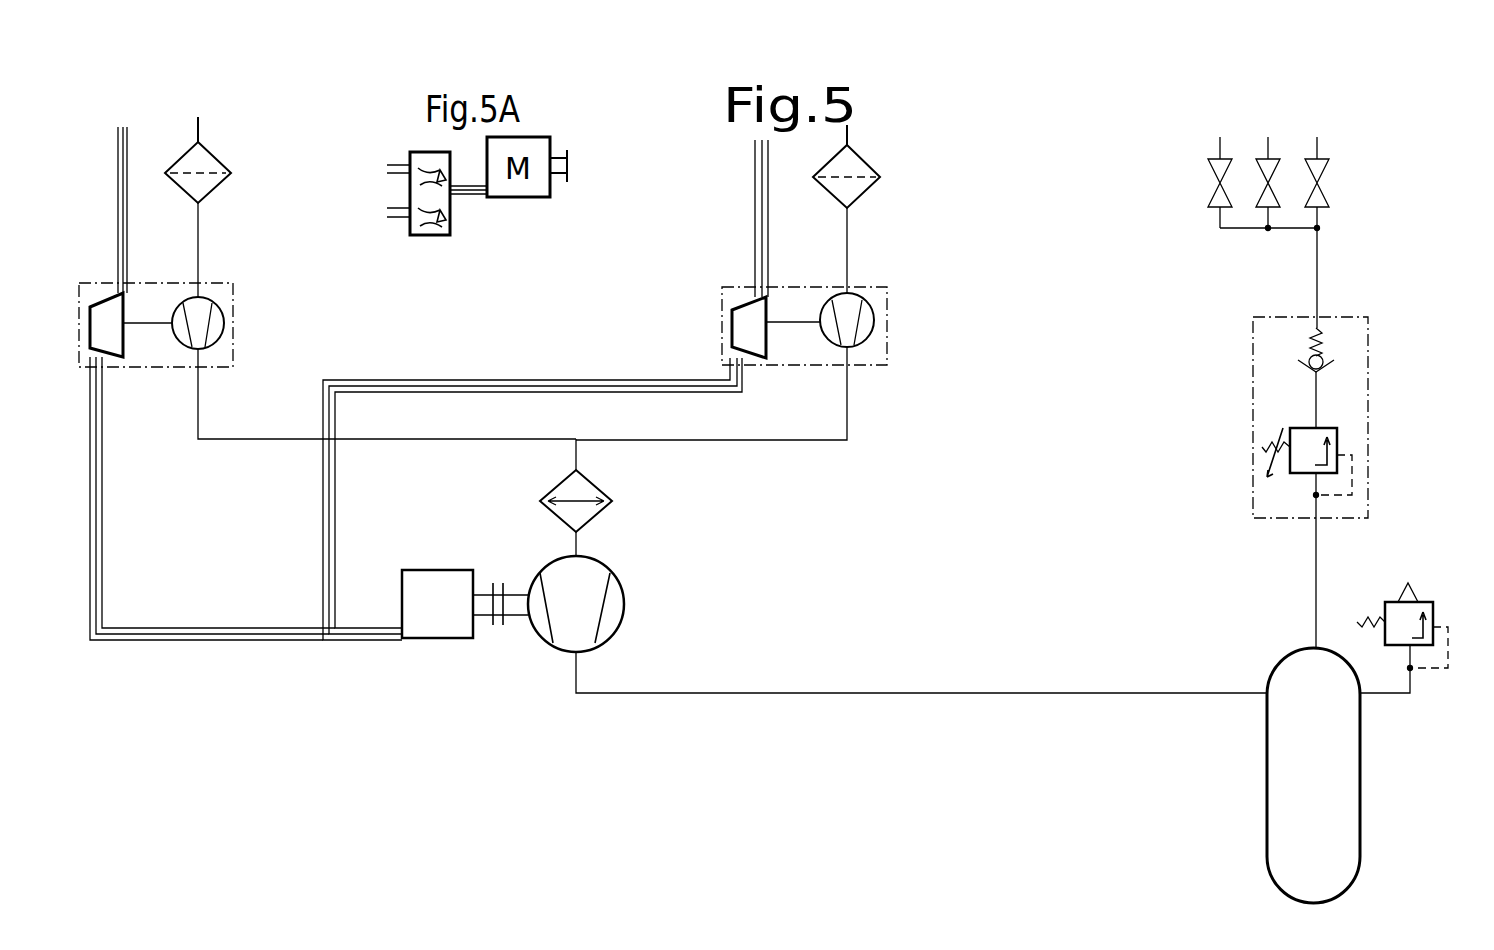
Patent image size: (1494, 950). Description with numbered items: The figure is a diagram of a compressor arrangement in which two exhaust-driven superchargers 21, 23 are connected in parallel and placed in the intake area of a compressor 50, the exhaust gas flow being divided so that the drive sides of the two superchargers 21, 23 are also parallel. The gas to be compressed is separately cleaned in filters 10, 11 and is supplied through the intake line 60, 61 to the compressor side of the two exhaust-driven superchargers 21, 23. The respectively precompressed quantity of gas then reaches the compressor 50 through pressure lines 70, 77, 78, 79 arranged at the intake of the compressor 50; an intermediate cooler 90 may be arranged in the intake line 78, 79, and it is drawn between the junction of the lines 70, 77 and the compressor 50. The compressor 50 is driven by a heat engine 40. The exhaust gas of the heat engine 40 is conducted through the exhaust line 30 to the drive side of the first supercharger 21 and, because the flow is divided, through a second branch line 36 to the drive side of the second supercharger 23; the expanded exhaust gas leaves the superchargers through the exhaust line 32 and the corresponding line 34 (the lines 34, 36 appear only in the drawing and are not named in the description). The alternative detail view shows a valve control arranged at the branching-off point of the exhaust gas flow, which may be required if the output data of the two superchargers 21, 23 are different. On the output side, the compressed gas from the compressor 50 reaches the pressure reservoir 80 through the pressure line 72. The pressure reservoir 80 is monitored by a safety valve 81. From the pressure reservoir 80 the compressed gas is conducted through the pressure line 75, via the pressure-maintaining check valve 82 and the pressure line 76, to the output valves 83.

The filter 10 is at (223, 162).
The filter 11 is at (873, 177).
The exhaust-driven supercharger 21 is at (225, 323).
The exhaust-driven supercharger 23 is at (873, 321).
The exhaust line 30 is at (147, 630).
The exhaust line 32 is at (127, 157).
The inlet line 34 is at (755, 158).
The control line 36 is at (482, 380).
The heat engine 40 is at (398, 588).
The compressor 50 is at (623, 590).
The intake line 60 is at (200, 237).
The intake line 61 is at (848, 250).
The pressure line 70 is at (232, 438).
The pressure line 72 is at (663, 693).
The pressure line 75 is at (1316, 565).
The pressure line 76 is at (1318, 258).
The pressure line 77 is at (820, 438).
The pressure line 78 is at (578, 457).
The pressure line 79 is at (577, 548).
The pressure reservoir 80 is at (1362, 768).
The safety valve 81 is at (1437, 638).
The pressure-maintaining check valve 82 is at (1338, 433).
The output valves 83 is at (1320, 182).
The intermediate cooler 90 is at (612, 502).